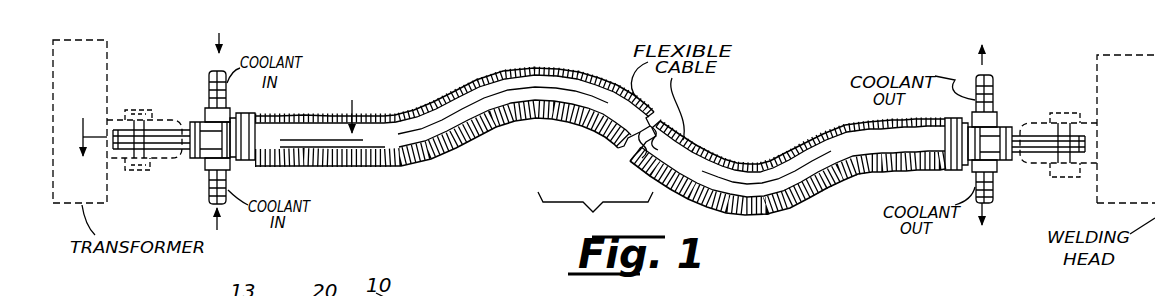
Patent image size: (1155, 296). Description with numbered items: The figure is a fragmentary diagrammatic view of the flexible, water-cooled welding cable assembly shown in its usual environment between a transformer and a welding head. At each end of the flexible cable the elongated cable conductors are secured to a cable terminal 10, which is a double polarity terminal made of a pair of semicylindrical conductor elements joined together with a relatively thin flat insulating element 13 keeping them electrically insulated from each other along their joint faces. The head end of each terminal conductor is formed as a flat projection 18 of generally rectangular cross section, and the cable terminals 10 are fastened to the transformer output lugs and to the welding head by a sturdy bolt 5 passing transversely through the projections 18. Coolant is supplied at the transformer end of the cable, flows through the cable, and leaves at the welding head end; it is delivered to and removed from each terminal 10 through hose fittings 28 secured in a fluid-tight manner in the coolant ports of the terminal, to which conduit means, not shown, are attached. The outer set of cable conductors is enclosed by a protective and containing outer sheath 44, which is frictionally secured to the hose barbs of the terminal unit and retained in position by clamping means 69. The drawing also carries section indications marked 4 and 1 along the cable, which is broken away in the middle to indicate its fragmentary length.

The flexible cable 1 is at (447, 158).
The section line 4- 4 is at (220, 112).
The bolt 5 is at (147, 112).
The cable terminal 10 is at (195, 166).
The insulating element 13 is at (137, 135).
The flat projection 18 is at (170, 128).
The hose fitting 28 is at (209, 112).
The outer sheath 44 is at (628, 152).
The clamping means 69 is at (250, 118).